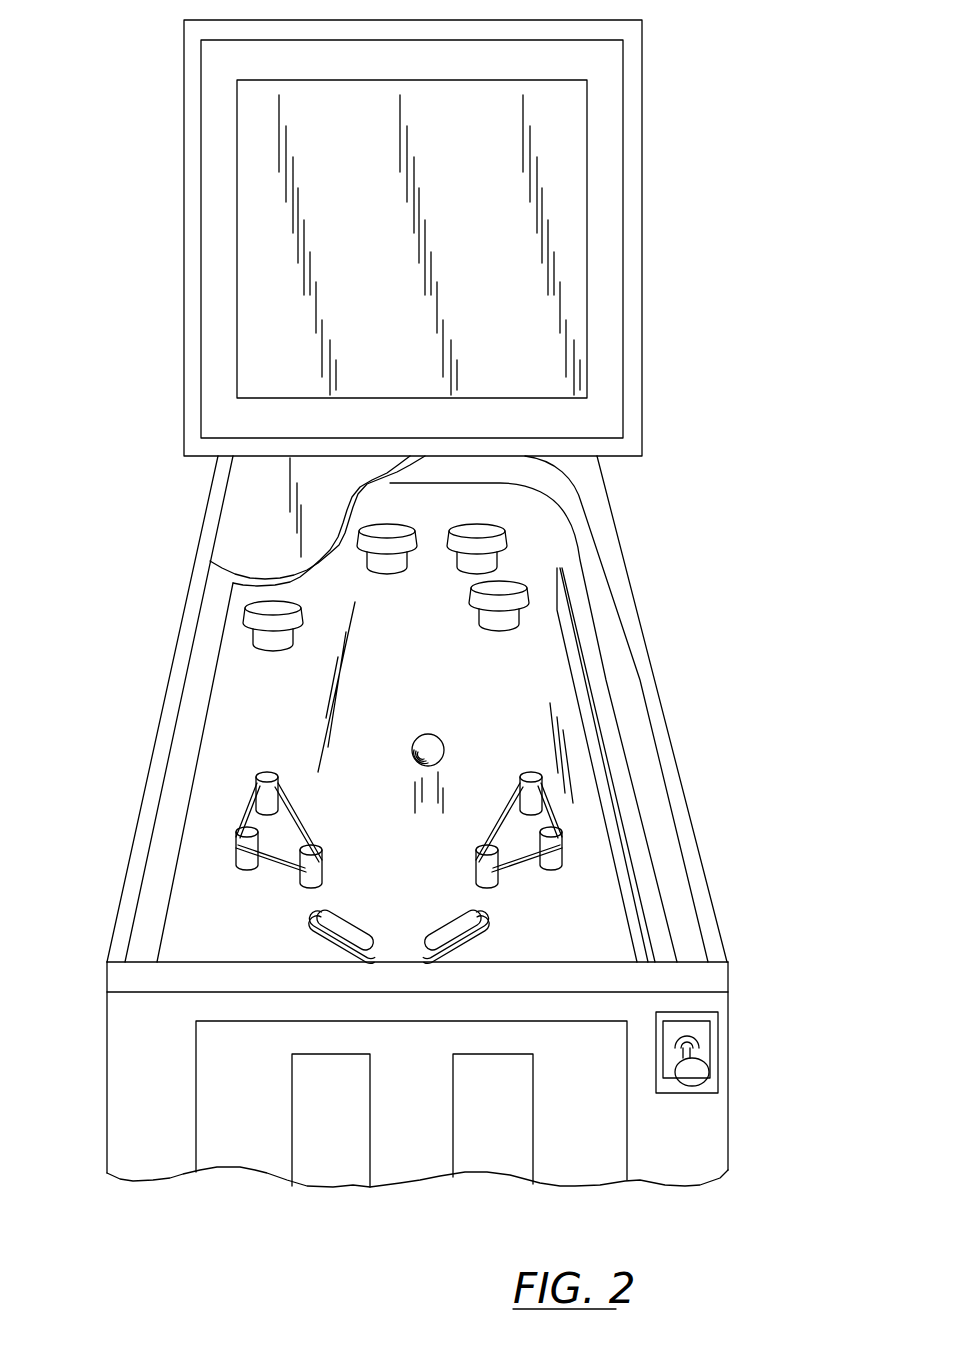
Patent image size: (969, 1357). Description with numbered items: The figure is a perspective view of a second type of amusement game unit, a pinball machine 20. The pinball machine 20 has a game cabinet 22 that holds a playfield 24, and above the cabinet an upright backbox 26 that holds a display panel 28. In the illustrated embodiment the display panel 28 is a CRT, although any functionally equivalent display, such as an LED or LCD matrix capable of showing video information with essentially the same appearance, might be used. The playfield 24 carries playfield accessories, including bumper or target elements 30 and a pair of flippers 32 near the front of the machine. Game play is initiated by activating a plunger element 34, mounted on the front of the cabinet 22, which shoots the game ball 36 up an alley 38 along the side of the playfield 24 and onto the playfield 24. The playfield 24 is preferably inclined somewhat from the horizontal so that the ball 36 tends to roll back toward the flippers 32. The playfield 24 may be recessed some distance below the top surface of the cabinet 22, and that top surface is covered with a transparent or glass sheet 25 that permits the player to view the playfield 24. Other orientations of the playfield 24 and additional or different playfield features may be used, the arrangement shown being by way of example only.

The pinball machine 20 is at (726, 788).
The game cabinet 22 is at (133, 850).
The playfield 24 is at (250, 697).
The transparent or glass sheet 25 is at (253, 489).
The backbox 26 is at (184, 350).
The display panel 28 is at (565, 177).
The bumper or target elements 30 is at (389, 568).
The flippers 32 is at (442, 922).
The plunger element 34 is at (702, 1077).
The ball 36 is at (445, 747).
The alley 38 is at (620, 677).